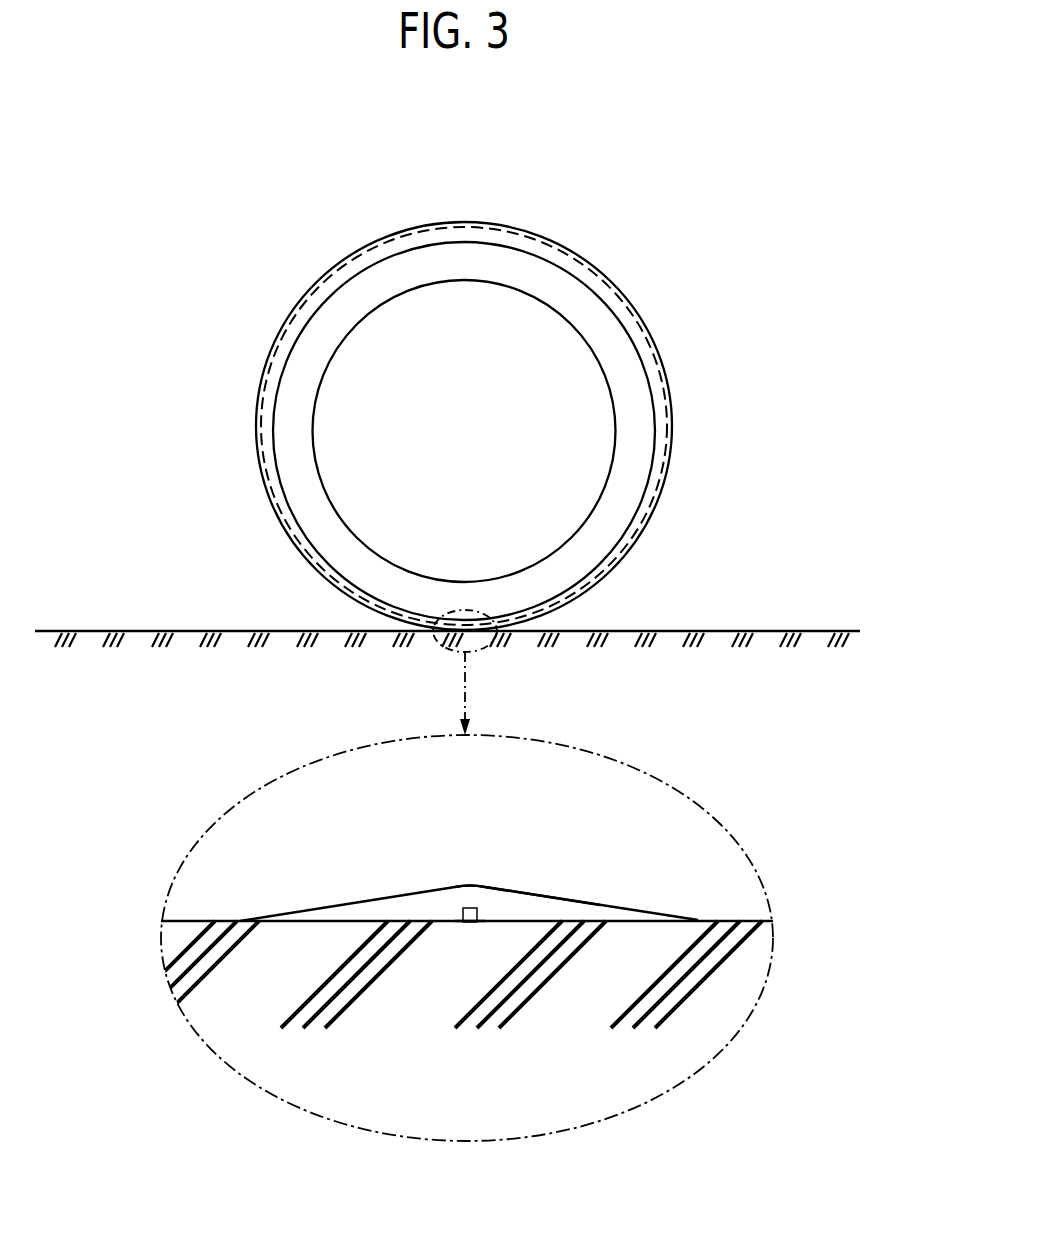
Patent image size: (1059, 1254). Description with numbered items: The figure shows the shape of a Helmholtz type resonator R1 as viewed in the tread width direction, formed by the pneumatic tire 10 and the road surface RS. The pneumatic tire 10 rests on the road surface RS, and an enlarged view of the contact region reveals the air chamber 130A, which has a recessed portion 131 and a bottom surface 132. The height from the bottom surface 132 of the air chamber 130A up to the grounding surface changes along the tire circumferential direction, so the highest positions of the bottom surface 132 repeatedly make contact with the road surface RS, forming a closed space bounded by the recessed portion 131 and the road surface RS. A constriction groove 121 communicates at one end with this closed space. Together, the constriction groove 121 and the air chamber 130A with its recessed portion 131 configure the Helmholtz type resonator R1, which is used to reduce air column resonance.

The pneumatic tire 10 is at (623, 255).
The road surface RS is at (745, 630).
The air chamber 130A is at (435, 909).
The recessed portion 131 is at (471, 898).
The bottom surface 132 is at (506, 898).
The constriction groove 121 is at (463, 913).
The Helmholtz type resonator R1 is at (466, 938).